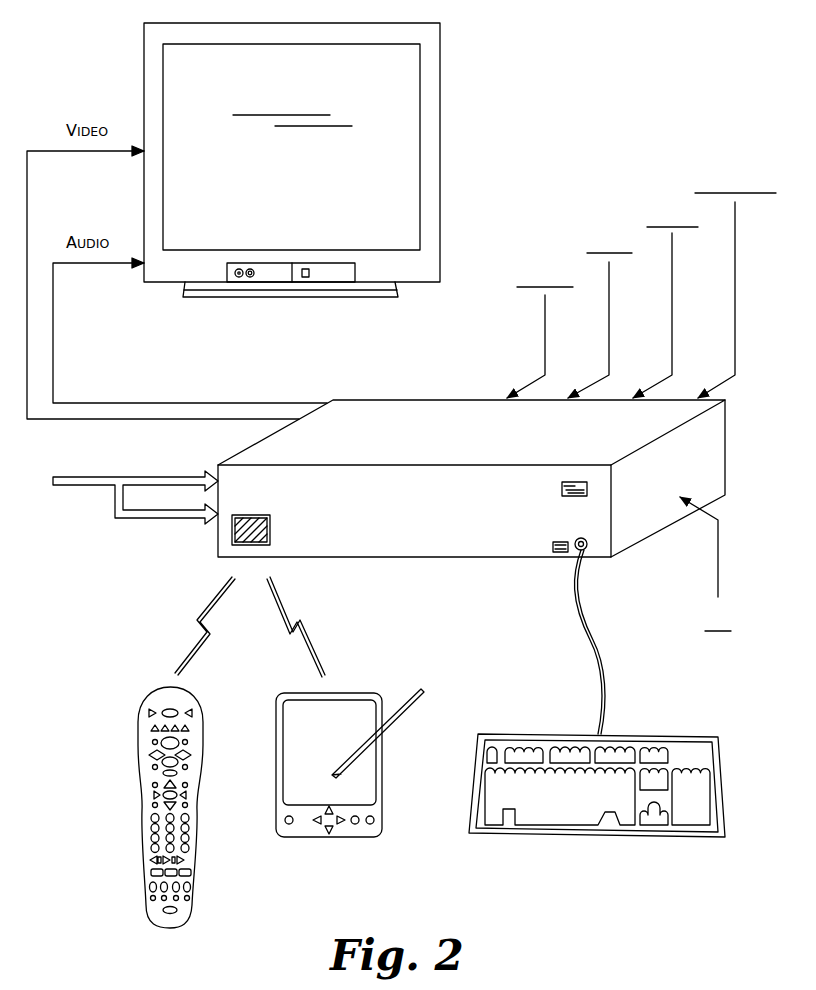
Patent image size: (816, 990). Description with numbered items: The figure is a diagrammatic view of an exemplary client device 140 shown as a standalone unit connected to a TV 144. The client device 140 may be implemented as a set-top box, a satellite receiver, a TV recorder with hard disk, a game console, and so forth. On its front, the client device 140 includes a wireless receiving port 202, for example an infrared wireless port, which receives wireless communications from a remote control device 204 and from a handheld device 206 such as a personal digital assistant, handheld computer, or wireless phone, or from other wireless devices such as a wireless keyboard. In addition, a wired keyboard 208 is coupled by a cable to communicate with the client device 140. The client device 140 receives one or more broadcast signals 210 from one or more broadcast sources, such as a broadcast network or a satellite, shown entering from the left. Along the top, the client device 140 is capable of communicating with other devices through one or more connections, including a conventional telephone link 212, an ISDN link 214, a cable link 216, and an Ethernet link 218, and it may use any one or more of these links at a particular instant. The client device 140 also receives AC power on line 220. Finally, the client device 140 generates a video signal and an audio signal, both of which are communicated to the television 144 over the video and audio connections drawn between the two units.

The client device 140 is at (419, 443).
The TV 144 is at (393, 240).
The wireless receiving port 202 is at (264, 515).
The remote control device 204 is at (140, 712).
The handheld device 206 is at (345, 693).
The wired keyboard 208 is at (642, 734).
The broadcast signals 210 is at (95, 486).
The telephone link 212 is at (532, 262).
The ISDN link 214 is at (602, 220).
The cable link 216 is at (658, 192).
The Ethernet link 218 is at (715, 165).
The line 220 is at (718, 563).